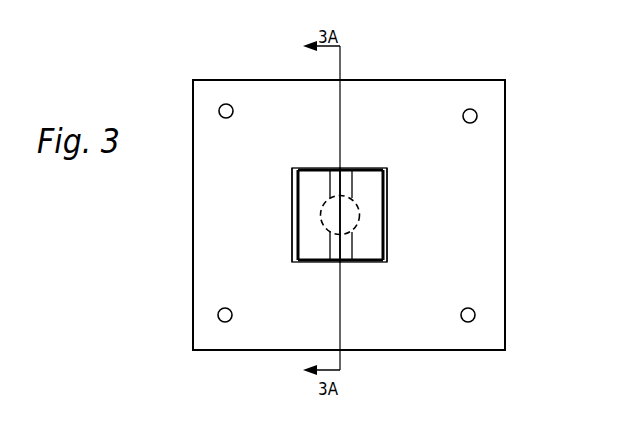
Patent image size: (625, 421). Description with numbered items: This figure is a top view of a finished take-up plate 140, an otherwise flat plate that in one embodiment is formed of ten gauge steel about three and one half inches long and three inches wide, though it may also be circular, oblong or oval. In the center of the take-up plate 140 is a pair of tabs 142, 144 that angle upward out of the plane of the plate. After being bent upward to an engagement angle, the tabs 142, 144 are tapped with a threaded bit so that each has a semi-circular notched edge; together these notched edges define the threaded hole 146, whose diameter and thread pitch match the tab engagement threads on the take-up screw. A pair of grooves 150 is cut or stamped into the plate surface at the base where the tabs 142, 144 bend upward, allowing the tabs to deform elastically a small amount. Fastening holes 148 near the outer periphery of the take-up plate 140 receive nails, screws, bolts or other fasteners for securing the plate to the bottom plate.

The take-up plate 140 is at (551, 88).
The tab 142 is at (313, 178).
The tab 144 is at (367, 178).
The threaded hole 146 is at (358, 218).
The fastening holes 148 is at (228, 105).
The grooves 150 is at (293, 244).